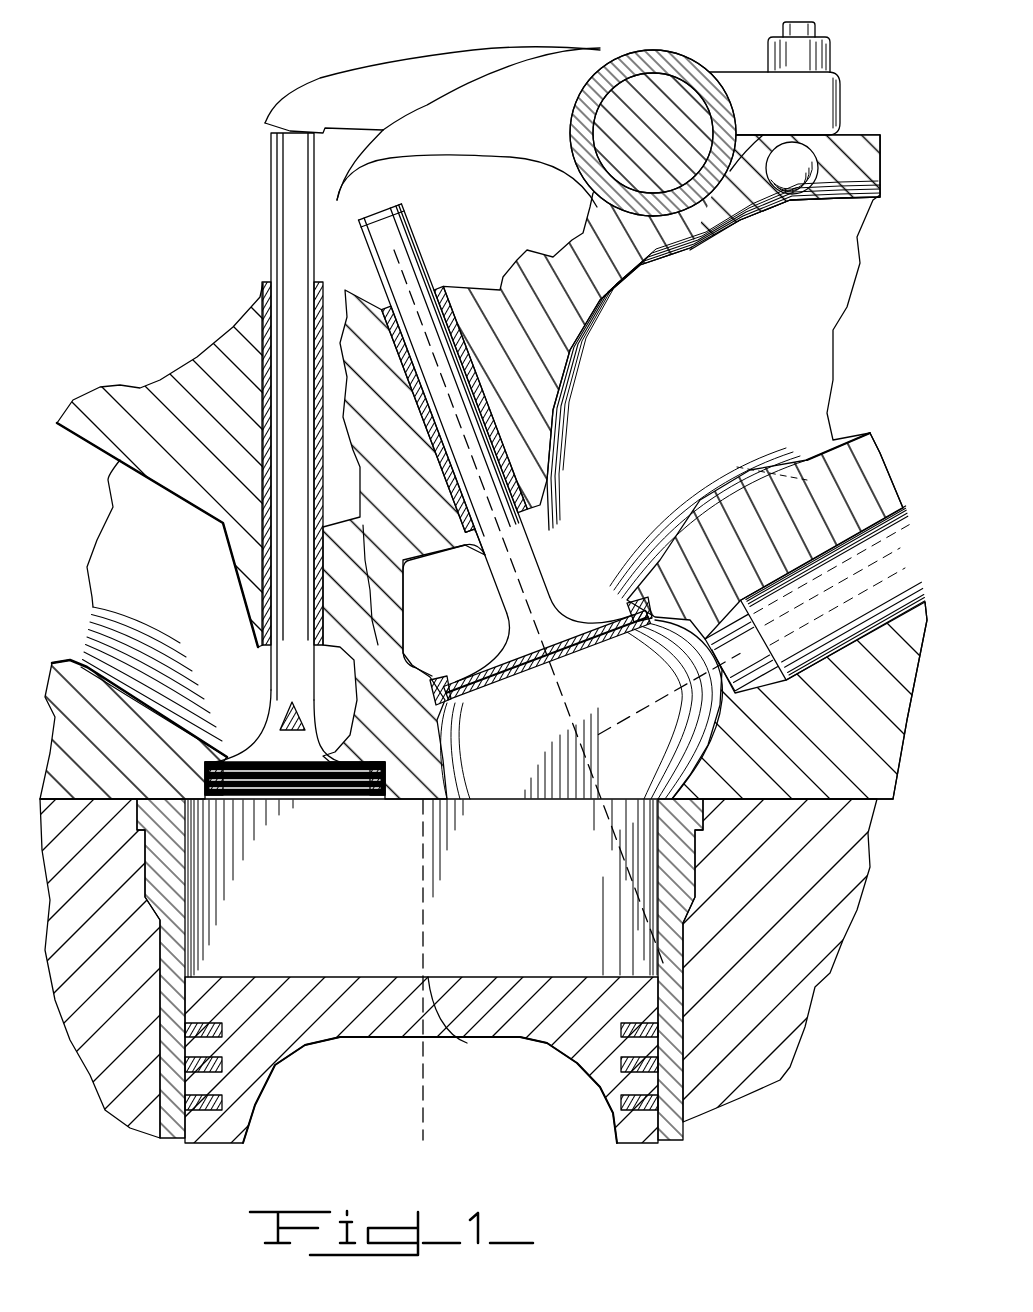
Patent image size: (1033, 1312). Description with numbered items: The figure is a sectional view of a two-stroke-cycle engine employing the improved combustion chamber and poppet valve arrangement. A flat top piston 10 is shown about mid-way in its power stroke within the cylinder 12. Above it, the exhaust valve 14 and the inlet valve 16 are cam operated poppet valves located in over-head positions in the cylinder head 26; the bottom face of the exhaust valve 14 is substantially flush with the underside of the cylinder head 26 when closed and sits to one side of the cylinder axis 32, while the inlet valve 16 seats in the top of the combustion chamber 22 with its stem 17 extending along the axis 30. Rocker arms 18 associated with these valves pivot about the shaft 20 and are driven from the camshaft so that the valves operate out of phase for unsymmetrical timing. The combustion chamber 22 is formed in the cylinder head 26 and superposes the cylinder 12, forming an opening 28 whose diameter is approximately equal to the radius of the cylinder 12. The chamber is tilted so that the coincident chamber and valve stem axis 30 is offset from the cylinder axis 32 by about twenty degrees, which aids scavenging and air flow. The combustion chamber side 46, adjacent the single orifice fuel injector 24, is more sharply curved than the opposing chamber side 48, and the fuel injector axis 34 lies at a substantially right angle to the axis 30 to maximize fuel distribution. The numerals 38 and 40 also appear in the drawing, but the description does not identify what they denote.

The piston 10 is at (380, 1013).
The cylinder 12 is at (210, 937).
The exhaust valve 14 is at (283, 195).
The inlet valve 16 is at (500, 507).
The stem 17 is at (397, 257).
The rocker arms 18 is at (550, 80).
The shaft 20 is at (665, 108).
The combustion chamber 22 is at (667, 753).
The fuel injector 24 is at (907, 537).
The cylinder head 26 is at (745, 200).
The opening 28 is at (548, 802).
The axis 30 is at (507, 547).
The cylinder axis 32 is at (430, 1060).
The fuel injector axis 34 is at (887, 572).
The exhaust port 38 is at (777, 283).
The intake port 40 is at (112, 560).
The combustion chamber side 46 is at (723, 717).
The opposing chamber side 48 is at (377, 760).